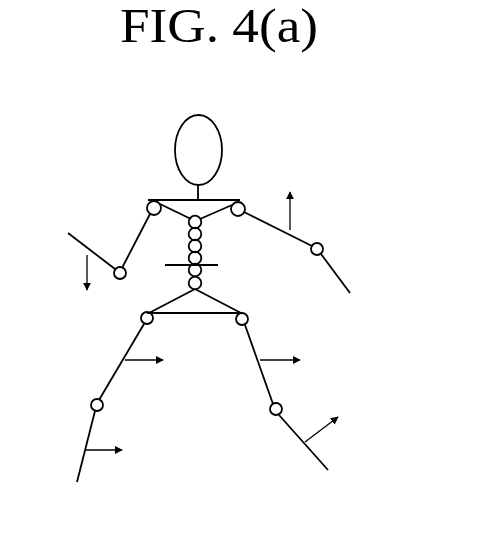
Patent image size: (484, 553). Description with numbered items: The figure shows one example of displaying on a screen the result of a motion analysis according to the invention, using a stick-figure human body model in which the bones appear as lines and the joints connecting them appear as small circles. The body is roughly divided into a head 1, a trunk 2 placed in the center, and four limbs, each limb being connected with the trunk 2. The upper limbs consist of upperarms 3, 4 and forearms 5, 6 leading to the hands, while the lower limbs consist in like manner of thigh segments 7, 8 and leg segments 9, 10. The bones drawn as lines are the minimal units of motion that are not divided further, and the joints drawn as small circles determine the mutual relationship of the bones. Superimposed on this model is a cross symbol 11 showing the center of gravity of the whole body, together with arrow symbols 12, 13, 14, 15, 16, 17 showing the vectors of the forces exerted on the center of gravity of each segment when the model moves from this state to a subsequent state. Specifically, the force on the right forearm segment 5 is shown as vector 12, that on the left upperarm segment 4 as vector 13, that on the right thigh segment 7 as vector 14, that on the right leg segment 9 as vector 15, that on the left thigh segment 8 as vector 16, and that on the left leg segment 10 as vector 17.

The head 1 is at (222, 140).
The trunk 2 is at (202, 245).
The upperarm 3 is at (138, 238).
The upperarm 4 is at (295, 235).
The forearm 5 is at (77, 243).
The forearm 6 is at (342, 277).
The thigh segment 7 is at (128, 351).
The thigh segment 8 is at (262, 372).
The leg segment 9 is at (85, 430).
The leg segment 10 is at (293, 428).
The cross symbol 11 is at (208, 268).
The arrow symbol 12 is at (91, 294).
The arrow symbol 13 is at (292, 193).
The arrow symbol 14 is at (164, 356).
The arrow symbol 15 is at (123, 448).
The arrow symbol 16 is at (300, 357).
The arrow symbol 17 is at (341, 421).